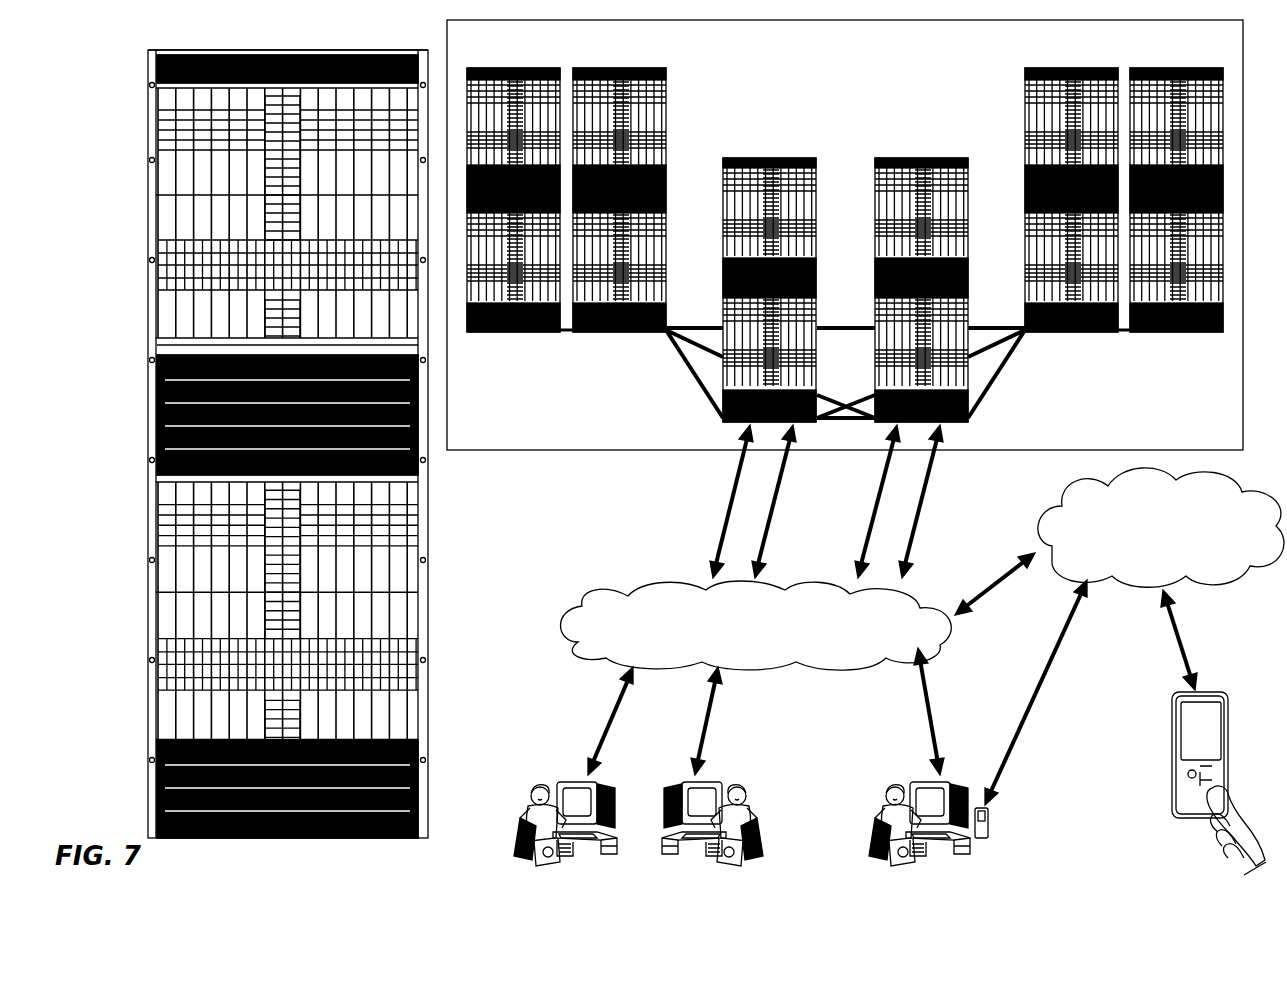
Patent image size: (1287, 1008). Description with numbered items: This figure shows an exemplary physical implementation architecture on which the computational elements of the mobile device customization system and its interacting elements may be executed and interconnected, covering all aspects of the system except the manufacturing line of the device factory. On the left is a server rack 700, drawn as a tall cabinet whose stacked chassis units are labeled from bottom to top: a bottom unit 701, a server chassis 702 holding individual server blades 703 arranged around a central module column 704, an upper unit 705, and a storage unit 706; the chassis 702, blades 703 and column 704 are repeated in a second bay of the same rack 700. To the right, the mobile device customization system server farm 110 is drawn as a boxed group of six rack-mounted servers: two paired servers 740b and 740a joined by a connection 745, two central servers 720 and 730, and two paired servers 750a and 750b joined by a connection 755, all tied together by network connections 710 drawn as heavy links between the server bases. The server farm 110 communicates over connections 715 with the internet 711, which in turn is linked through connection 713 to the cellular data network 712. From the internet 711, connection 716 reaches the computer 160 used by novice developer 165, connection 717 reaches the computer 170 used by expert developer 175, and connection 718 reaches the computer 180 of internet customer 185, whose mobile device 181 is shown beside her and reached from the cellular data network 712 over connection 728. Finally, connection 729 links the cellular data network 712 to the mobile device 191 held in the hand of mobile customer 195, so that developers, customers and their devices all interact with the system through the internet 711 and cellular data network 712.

The server rack 700 is at (385, 42).
The bottom chassis unit 701 is at (152, 790).
The server blade chassis 702 is at (150, 312).
The server blade 703 is at (165, 220).
The central module column 704 is at (270, 165).
The top chassis unit 705 is at (150, 57).
The storage chassis unit 706 is at (152, 398).
The mobile device customization system server farm 110 is at (1190, 54).
The network connections between servers 710 is at (714, 350).
The internet 711 is at (848, 634).
The cellular data network 712 is at (1175, 512).
The connection between internet and cellular data network 713 is at (1000, 575).
The connections between server farm and internet 715 is at (925, 505).
The connection to internet 716 is at (618, 698).
The connection to internet 717 is at (712, 700).
The connection to internet 718 is at (920, 700).
The server 720 is at (770, 158).
The server 730 is at (925, 158).
The server 740a is at (620, 333).
The server 740b is at (520, 333).
The server connection 745 is at (567, 334).
The server 750a is at (1075, 333).
The server 750b is at (1175, 333).
The server connection 755 is at (1122, 334).
The connection to cellular data network 728 is at (1035, 715).
The connection to cellular data network 729 is at (1192, 652).
The computer 160 is at (578, 780).
The novice developer 165 is at (530, 810).
The computer 170 is at (708, 780).
The expert developer 175 is at (748, 810).
The computer 180 is at (920, 782).
The internet customer 185 is at (880, 812).
The mobile device 181 is at (990, 835).
The mobile device 191 is at (1172, 796).
The mobile customer 195 is at (1218, 846).